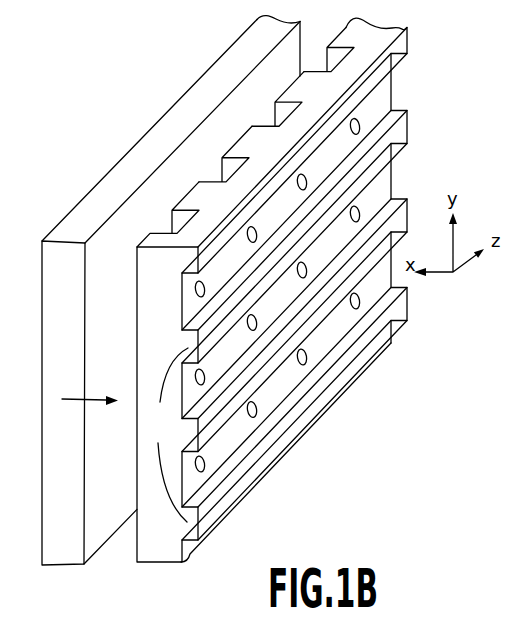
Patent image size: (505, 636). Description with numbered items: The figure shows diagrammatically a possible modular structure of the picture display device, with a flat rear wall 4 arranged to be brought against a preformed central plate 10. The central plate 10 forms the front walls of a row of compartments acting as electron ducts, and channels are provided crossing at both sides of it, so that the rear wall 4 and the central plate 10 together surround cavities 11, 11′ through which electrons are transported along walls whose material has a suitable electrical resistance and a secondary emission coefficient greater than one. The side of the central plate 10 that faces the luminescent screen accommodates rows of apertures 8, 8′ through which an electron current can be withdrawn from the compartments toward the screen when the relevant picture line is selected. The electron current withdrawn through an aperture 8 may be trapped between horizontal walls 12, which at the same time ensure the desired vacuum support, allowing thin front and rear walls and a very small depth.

The rear wall 4 is at (57, 513).
The central plate 10 is at (148, 552).
The cavity 11 is at (180, 220).
The cavity 11′ is at (233, 165).
The aperture 8 is at (203, 282).
The aperture 8′ is at (202, 376).
The horizontal walls 12 is at (188, 435).